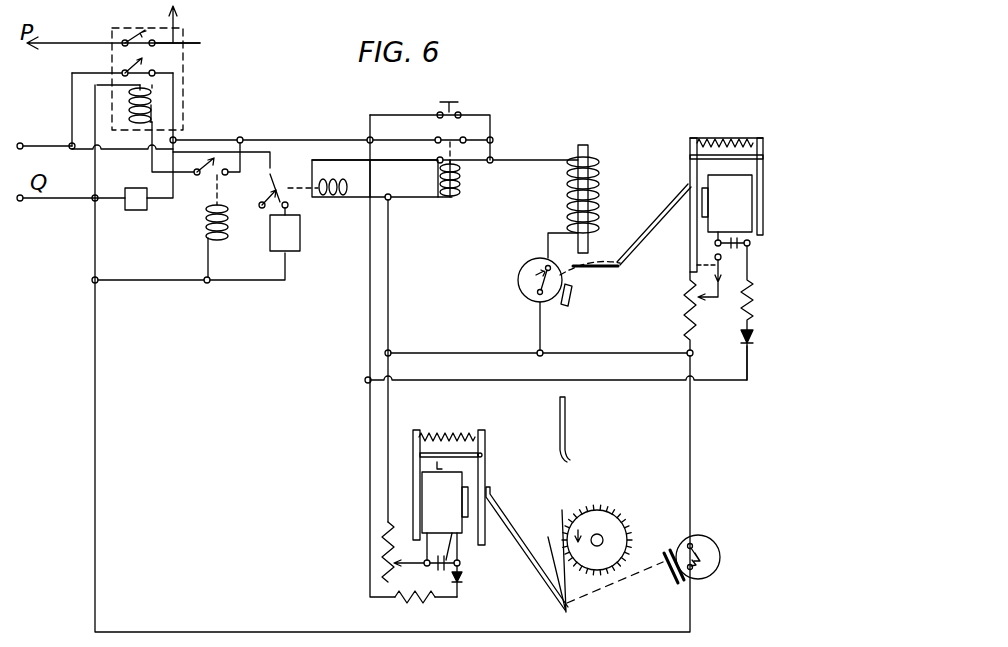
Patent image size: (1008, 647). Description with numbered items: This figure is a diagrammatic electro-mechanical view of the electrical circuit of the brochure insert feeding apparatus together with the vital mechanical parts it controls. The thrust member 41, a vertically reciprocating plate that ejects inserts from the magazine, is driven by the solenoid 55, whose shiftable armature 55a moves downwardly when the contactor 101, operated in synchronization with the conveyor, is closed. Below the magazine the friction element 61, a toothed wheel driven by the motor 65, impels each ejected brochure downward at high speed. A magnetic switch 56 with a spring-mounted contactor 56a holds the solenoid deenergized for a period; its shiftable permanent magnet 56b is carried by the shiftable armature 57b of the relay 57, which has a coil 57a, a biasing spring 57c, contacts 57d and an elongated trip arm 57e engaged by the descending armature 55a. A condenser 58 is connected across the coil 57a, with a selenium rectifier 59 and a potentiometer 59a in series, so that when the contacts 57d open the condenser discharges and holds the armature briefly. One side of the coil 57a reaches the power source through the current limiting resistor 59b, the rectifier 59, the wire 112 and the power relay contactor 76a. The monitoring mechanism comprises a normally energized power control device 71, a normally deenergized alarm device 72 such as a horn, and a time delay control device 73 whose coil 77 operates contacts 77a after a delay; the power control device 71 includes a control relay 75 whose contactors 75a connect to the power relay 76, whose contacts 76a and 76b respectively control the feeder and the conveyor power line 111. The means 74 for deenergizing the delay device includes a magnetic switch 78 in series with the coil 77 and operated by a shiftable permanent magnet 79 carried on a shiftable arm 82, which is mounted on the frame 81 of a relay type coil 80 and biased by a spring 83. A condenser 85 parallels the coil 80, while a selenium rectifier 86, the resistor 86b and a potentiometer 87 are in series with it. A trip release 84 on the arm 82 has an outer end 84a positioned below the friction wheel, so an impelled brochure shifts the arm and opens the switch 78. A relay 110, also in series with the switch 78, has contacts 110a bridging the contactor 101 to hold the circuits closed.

The thrust member 41 is at (566, 418).
The solenoid 55 is at (577, 198).
The solenoid armature 55a is at (585, 249).
The magnetic switch 56 is at (527, 265).
The shiftable contactor 56a is at (536, 275).
The shiftable permanent magnet 56b is at (572, 296).
The relay 57 is at (765, 193).
The relay coil 57a is at (727, 203).
The shiftable armature 57b is at (688, 233).
The spring 57c is at (738, 121).
The contacts 57d is at (732, 276).
The trip arm 57e is at (594, 273).
The condenser 58 is at (724, 221).
The selenium rectifier 59 is at (755, 345).
The potentiometer 59a is at (685, 320).
The current limiting resistor 59b is at (752, 300).
The friction element 61 is at (607, 518).
The motor 65 is at (137, 211).
The power control device 71 is at (199, 249).
The alarm device 72 is at (300, 234).
The time delay control device 73 is at (334, 204).
The means for deenergizing the time delay control device 74 is at (505, 408).
The control relay 75 is at (204, 235).
The contactors of control relay 75a is at (206, 154).
The power relay 76 is at (136, 125).
The power relay contact 76a is at (127, 65).
The power relay contact 76b is at (135, 33).
The time delay relay coil 77 is at (334, 170).
The time delay relay contacts 77a is at (266, 199).
The magnetic switch 78 is at (706, 545).
The shiftable permanent magnet 79 is at (668, 579).
The relay type coil 80 is at (442, 502).
The coil frame 81 is at (449, 467).
The shiftable magnetic arm 82 is at (487, 477).
The spring 83 is at (464, 431).
The trip release 84 is at (523, 540).
The outer end portion of trip release 84a is at (569, 606).
The condenser 85 is at (441, 537).
The selenium rectifier 86 is at (468, 584).
The resistor 86b is at (415, 600).
The potentiometer 87 is at (408, 521).
The contactor 101 is at (470, 111).
The relay 110 is at (462, 180).
The relay contacts 110a is at (450, 132).
The power line 111 is at (187, 41).
The wire 112 is at (367, 313).